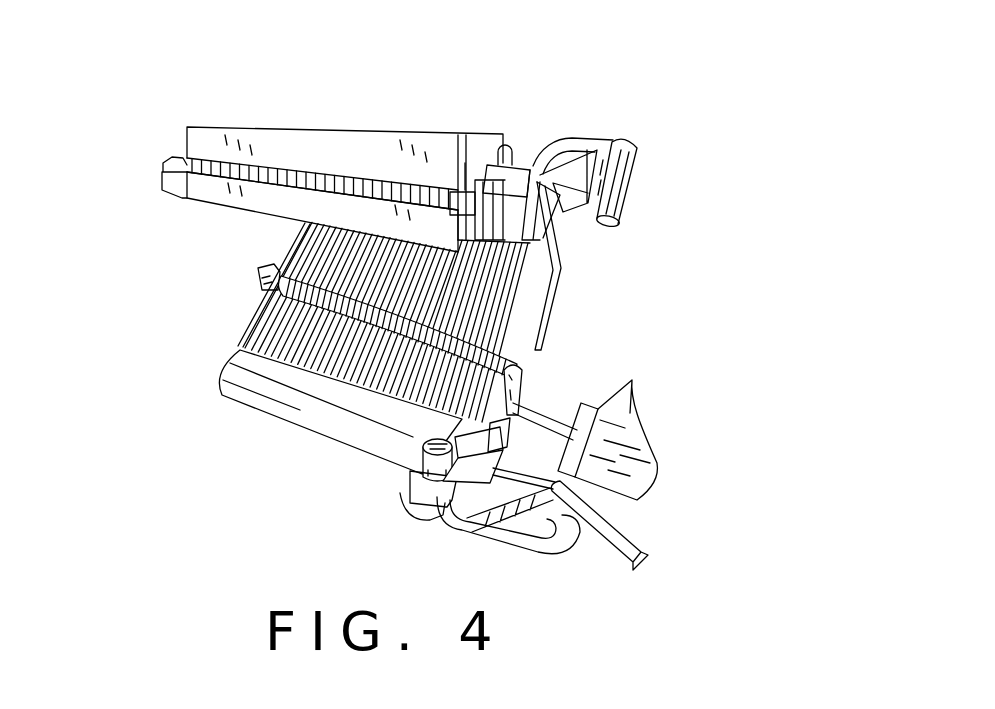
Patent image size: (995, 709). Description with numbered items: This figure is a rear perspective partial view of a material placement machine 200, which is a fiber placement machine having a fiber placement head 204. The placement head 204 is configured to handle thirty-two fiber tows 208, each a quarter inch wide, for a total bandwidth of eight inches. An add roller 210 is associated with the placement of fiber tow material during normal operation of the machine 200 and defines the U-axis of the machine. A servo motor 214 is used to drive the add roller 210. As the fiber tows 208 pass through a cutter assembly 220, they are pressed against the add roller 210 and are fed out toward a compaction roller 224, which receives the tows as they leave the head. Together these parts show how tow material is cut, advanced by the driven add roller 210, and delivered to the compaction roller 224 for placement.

The material placement machine 200 is at (408, 305).
The fiber placement head 204 is at (553, 270).
The fiber tows 208 is at (447, 343).
The add roller 210 is at (259, 270).
The servo motor 214 is at (655, 462).
The cutter assembly 220 is at (394, 163).
The compaction roller 224 is at (215, 387).